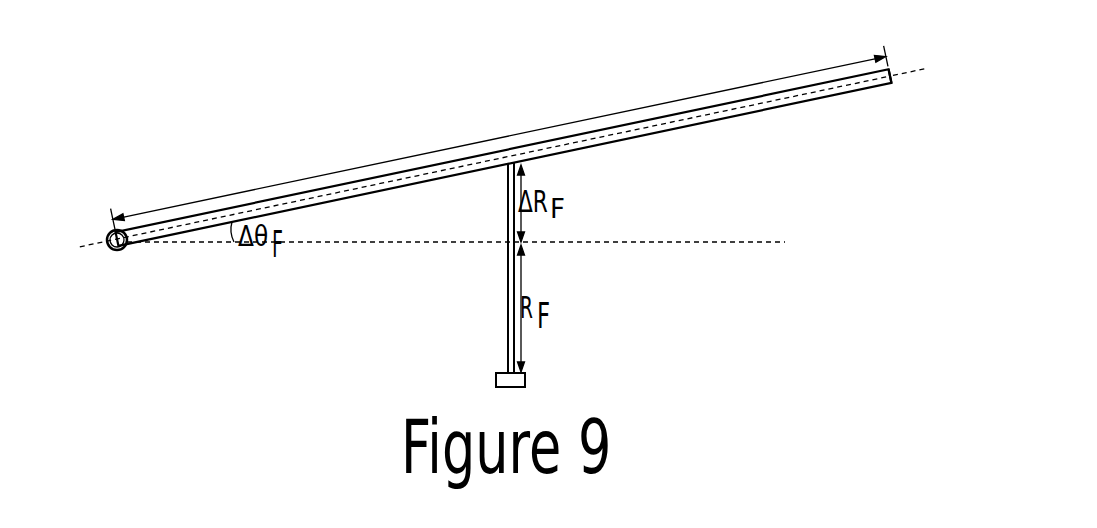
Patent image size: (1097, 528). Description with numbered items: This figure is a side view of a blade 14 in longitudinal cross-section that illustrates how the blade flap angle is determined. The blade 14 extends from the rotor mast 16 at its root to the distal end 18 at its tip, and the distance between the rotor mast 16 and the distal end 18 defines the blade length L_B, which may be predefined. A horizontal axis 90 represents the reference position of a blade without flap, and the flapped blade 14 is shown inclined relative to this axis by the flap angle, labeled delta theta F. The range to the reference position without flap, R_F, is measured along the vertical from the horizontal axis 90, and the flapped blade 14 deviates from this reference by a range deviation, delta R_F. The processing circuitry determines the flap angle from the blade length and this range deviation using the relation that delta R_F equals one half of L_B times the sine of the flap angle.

The blade 14 is at (708, 107).
The rotor mast 16 is at (107, 245).
The distal end of the blade 18 is at (893, 72).
The horizontal axis 90 is at (683, 242).